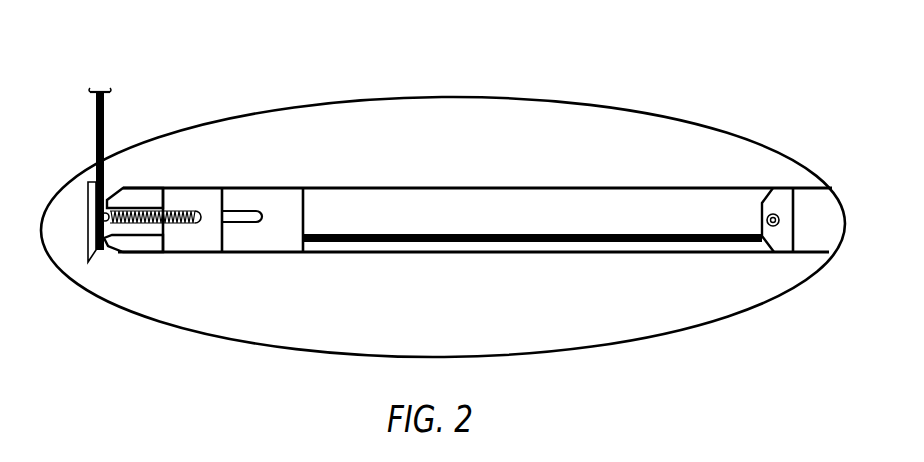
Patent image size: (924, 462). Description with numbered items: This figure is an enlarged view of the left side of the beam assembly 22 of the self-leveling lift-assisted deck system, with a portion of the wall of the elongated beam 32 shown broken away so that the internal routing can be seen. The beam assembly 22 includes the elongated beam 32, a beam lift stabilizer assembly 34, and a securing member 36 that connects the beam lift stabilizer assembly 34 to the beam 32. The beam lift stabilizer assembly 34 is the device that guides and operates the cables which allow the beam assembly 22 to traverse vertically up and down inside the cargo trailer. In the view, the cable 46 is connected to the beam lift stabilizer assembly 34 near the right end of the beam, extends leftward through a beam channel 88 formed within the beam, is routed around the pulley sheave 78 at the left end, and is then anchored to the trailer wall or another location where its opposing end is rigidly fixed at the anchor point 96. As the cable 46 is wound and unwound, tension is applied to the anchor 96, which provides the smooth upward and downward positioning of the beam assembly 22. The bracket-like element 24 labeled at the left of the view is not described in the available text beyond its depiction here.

The beam assembly 22 is at (652, 173).
The mounting plate 24 is at (77, 204).
The elongated beam 32 is at (822, 207).
The beam lift stabilizer assembly 34 is at (773, 214).
The securing member 36 is at (803, 305).
The cable 46 is at (96, 118).
The pulley sheave 78 is at (111, 228).
The beam channel 88 is at (277, 203).
The anchor point 96 is at (107, 92).